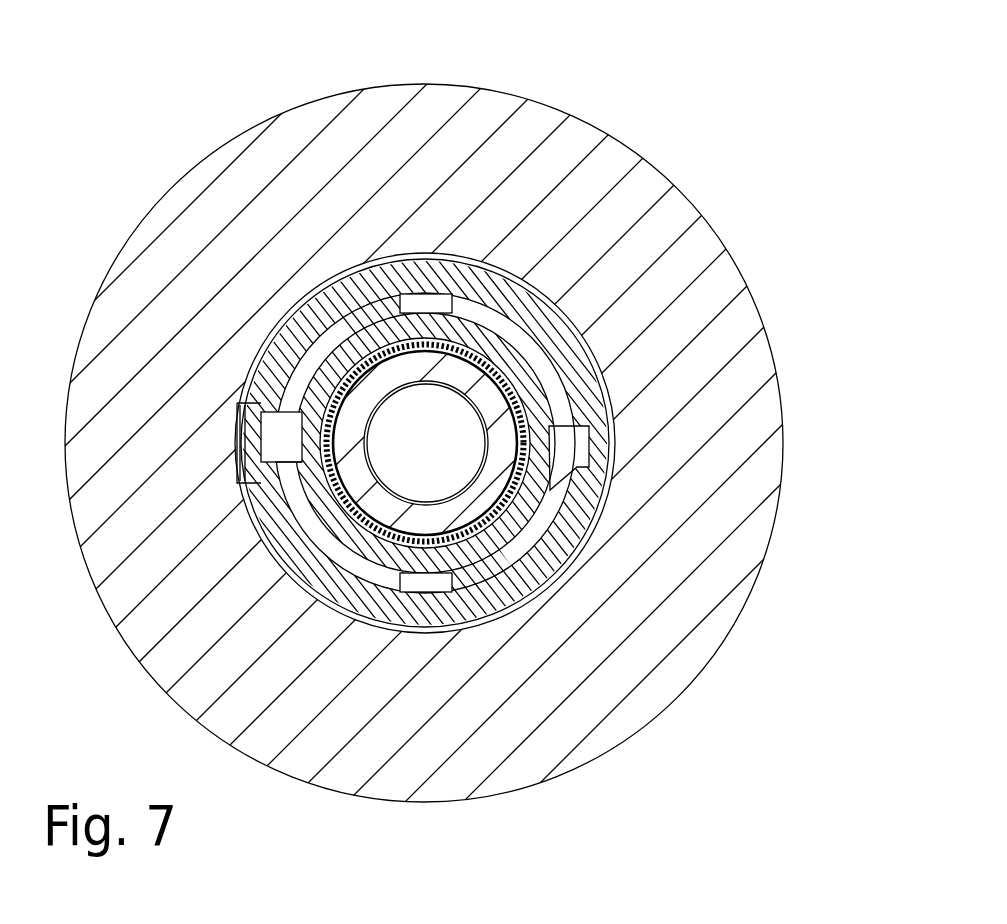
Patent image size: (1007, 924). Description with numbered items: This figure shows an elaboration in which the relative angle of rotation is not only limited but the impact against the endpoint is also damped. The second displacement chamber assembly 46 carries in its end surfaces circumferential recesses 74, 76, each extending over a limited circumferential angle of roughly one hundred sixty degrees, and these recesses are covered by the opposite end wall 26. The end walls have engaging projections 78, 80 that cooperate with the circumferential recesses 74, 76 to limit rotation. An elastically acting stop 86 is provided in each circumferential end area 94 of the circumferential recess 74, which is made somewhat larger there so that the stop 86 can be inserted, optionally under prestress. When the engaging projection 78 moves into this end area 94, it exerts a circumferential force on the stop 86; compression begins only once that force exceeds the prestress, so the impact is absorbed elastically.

The end wall 26 is at (610, 163).
The circumferential recess 74 is at (490, 318).
The circumferential recess 76 is at (529, 546).
The engaging projection 78 is at (428, 296).
The engaging projection 80 is at (434, 597).
The second displacement chamber assembly 46 is at (427, 443).
The circumferential end area 94 is at (259, 423).
The elastically acting stop 86 is at (283, 466).